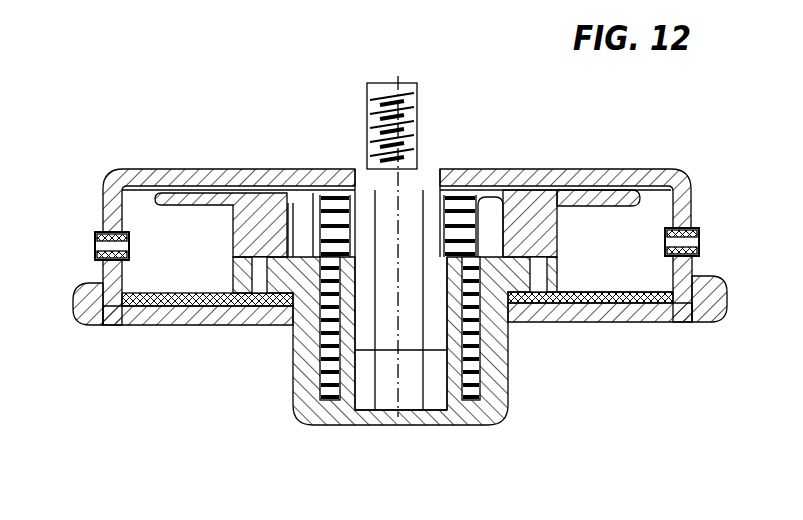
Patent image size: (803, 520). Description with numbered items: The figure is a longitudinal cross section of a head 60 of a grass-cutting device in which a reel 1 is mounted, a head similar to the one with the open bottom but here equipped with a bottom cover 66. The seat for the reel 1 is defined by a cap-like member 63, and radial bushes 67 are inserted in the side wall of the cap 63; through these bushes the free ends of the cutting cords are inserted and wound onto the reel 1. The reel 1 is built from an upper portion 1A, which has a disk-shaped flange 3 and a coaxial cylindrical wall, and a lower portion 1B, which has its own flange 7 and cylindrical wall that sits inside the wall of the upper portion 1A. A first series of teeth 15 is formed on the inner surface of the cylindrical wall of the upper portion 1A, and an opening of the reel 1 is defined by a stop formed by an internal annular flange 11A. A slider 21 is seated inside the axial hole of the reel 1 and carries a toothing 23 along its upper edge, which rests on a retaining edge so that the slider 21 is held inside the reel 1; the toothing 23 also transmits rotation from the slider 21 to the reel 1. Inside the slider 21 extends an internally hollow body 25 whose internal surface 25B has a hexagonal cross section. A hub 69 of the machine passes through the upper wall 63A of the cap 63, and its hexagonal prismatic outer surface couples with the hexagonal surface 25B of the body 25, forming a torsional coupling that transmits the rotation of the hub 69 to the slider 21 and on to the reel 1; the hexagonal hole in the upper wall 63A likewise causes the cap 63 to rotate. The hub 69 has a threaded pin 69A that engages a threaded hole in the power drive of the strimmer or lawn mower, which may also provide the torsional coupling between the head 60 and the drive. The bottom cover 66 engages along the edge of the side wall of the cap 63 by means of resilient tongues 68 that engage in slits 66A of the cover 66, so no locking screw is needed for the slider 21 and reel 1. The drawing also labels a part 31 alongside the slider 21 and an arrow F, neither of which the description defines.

The reel 1 is at (636, 218).
The upper portion of the reel 1A is at (580, 214).
The lower portion of the reel 1B is at (636, 284).
The disk-shaped flange 3 is at (177, 210).
The flange 7 is at (178, 273).
The internal annular flange 11A is at (530, 183).
The first series of teeth 15 is at (302, 190).
The slider 21 is at (306, 426).
The toothing 23 is at (245, 305).
The internally hollow body 25 is at (315, 342).
The internal surface with hexagonal cross section 25B is at (368, 406).
The piston sleeve 31 is at (457, 168).
The head of the grass-cutting device 60 is at (697, 177).
The cap-like member 63 is at (101, 216).
The upper wall of the cap 63A is at (248, 172).
The bottom cover 66 is at (608, 325).
The slits 66A is at (694, 326).
The radial bushes 67 is at (93, 252).
The resilient tongues 68 is at (100, 330).
The hub 69 is at (365, 212).
The threaded pin 69A is at (417, 94).
The applied force direction F is at (403, 452).